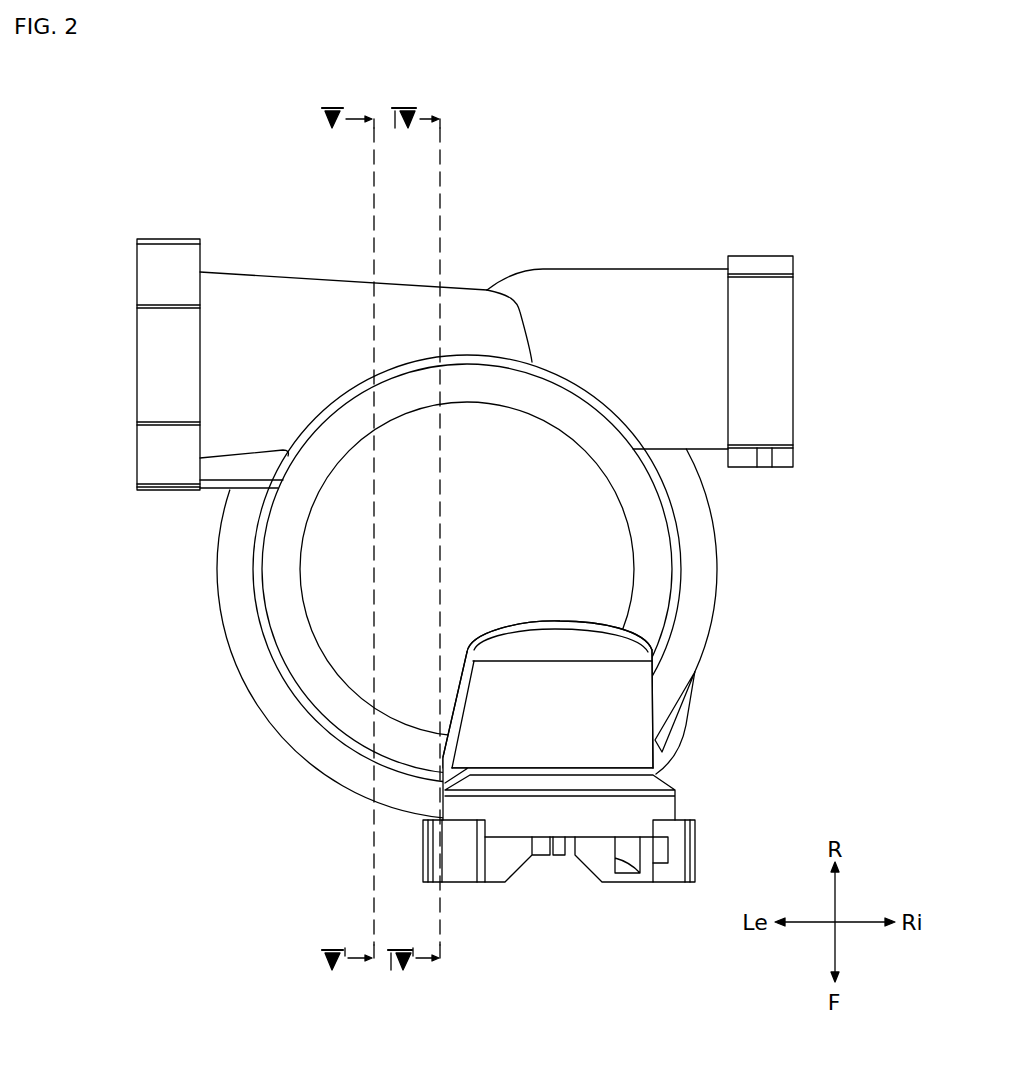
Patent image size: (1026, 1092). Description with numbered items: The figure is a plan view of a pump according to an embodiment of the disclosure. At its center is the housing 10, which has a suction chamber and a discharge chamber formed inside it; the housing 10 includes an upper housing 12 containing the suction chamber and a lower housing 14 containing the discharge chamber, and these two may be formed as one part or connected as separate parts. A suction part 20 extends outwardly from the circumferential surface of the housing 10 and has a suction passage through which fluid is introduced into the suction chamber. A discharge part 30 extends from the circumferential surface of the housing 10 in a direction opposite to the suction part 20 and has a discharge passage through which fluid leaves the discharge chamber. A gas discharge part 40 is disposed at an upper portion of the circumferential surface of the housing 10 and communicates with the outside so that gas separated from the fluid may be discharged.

The housing 10 is at (557, 586).
The upper housing 12 is at (610, 582).
The lower housing 14 is at (698, 528).
The suction part 20 is at (247, 287).
The discharge part 30 is at (645, 305).
The gas discharge part 40 is at (625, 732).